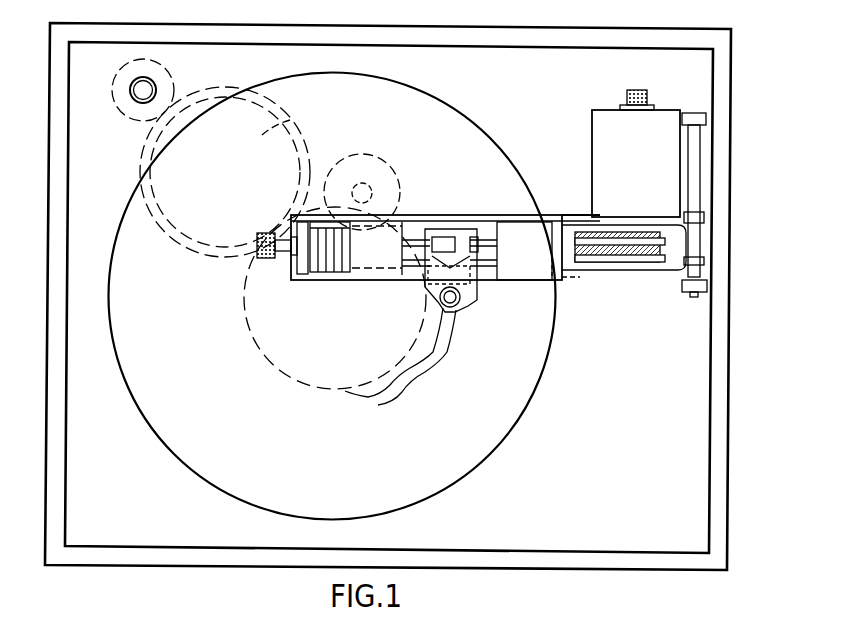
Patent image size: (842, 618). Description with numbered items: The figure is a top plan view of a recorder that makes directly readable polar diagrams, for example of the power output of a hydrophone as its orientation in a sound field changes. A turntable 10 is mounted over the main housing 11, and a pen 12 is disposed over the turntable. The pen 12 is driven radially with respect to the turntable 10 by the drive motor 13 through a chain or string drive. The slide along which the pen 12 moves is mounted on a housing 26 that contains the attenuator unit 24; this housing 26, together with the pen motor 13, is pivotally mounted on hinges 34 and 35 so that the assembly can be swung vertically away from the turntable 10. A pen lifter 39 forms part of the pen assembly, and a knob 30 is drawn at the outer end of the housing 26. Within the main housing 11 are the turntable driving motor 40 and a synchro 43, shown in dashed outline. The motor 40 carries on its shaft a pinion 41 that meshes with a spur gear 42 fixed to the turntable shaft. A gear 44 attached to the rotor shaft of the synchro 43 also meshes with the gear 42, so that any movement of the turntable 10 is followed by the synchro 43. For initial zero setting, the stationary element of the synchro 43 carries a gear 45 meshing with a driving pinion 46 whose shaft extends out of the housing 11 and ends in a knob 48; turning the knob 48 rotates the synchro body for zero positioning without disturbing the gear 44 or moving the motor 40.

The turntable 10 is at (540, 388).
The housing 11 is at (442, 28).
The pen 12 is at (456, 326).
The drive motor 13 is at (592, 152).
The attenuator unit 24 is at (325, 268).
The housing 26 is at (440, 216).
The adjusting knob 30 is at (262, 231).
The hinge 34 is at (708, 286).
The hinge 35 is at (706, 118).
The pen lifter 39 is at (472, 296).
The turntable driving motor 40 is at (378, 157).
The pinion 41 is at (350, 158).
The spur gear 42 is at (245, 337).
The synchro 43 is at (290, 120).
The gear 44 is at (212, 248).
The gear 45 is at (176, 244).
The driving pinion 46 is at (131, 121).
The knob 48 is at (155, 85).